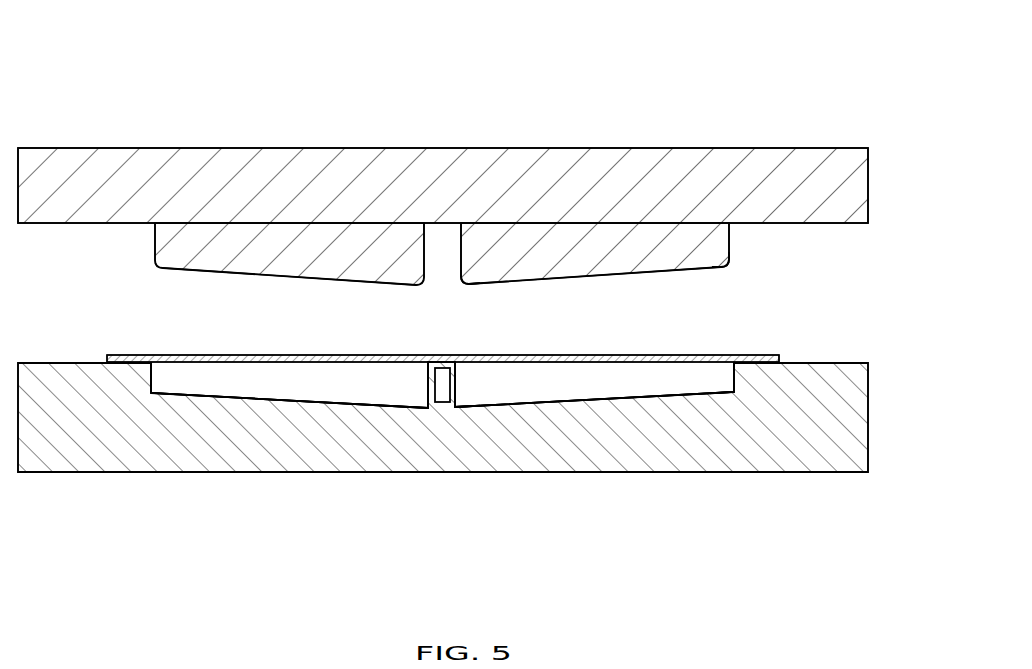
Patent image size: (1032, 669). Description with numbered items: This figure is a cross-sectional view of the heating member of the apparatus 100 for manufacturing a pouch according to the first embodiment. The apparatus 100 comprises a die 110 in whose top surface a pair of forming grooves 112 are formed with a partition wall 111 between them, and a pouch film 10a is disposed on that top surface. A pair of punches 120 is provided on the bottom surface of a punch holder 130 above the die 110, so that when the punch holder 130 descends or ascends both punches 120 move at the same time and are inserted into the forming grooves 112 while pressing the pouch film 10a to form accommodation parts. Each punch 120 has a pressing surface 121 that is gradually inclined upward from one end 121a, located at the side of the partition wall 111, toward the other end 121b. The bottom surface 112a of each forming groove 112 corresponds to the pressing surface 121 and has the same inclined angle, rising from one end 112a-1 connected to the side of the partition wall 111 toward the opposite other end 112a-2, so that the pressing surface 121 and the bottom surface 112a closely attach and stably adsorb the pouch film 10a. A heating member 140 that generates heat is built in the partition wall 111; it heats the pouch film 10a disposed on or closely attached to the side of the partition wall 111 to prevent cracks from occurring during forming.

The apparatus for manufacturing a pouch 100 is at (756, 106).
The punch holder 130 is at (868, 183).
The punch 120 is at (476, 285).
The pressing surface 121 is at (648, 272).
The one end of the pressing surface 121a is at (462, 284).
The other end of the pressing surface 121b is at (729, 270).
The pouch film 10a is at (766, 356).
The die 110 is at (868, 418).
The partition wall 111 is at (428, 383).
The heating member 140 is at (442, 403).
The forming groove 112 is at (647, 377).
The bottom surface of the forming groove 112a is at (561, 400).
The one end of the bottom surface 112a-1 is at (455, 400).
The other end of the bottom surface 112a-2 is at (731, 397).